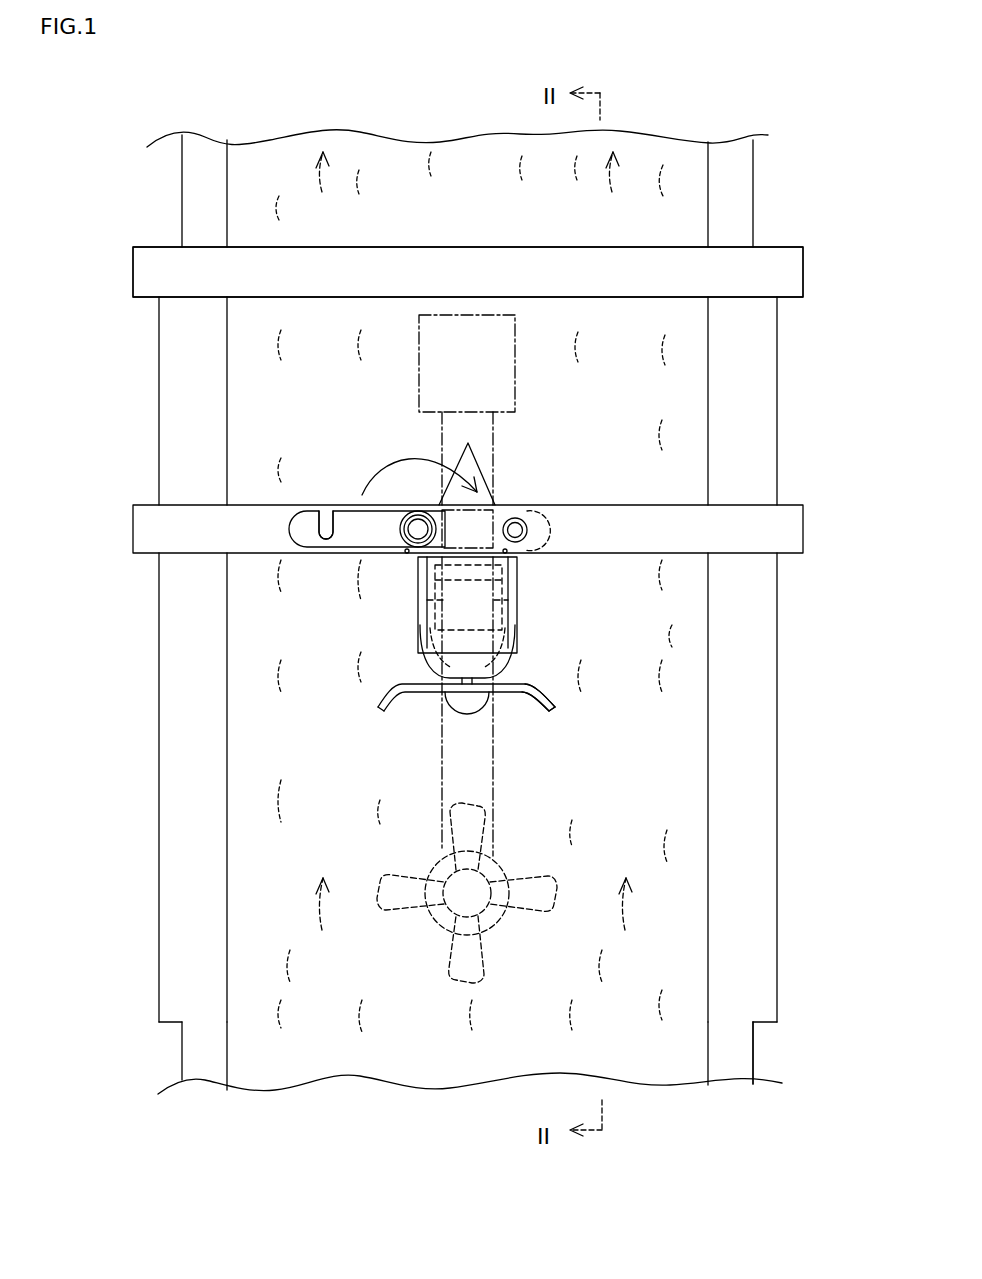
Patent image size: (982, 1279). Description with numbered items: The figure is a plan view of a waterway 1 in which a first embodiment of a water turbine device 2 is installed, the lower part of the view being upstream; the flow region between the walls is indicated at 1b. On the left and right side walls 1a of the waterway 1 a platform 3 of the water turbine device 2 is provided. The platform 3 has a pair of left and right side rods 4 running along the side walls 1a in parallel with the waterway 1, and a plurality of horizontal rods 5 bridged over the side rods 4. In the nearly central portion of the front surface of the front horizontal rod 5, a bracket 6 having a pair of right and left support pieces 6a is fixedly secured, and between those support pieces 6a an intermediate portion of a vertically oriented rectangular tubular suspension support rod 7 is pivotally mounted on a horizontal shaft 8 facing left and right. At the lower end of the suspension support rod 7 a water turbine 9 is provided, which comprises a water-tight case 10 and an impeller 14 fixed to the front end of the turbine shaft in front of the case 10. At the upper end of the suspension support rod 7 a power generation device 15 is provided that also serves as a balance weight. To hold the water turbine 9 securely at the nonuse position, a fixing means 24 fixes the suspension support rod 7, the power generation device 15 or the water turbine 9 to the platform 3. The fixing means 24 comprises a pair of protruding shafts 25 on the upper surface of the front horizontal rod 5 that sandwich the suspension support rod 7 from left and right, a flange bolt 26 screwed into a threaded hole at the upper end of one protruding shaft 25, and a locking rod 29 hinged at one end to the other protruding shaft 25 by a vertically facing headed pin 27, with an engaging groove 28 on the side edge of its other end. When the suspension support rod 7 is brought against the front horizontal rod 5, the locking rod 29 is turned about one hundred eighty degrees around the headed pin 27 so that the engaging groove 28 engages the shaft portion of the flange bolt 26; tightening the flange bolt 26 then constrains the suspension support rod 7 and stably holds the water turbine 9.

The waterway 1 is at (758, 162).
The side wall 1a is at (228, 170).
The flow passage 1b is at (427, 168).
The water turbine device 2 is at (786, 246).
The platform 3 is at (134, 258).
The side rod 4 is at (158, 415).
The horizontal rod 5 is at (144, 298).
The bracket 6 is at (468, 617).
The support piece 6a is at (418, 638).
The suspension support rod 7 is at (432, 660).
The horizontal shaft 8 is at (510, 605).
The water turbine 9 is at (500, 700).
The case 10 is at (494, 709).
The impeller 14 is at (540, 708).
The power generation device 15 is at (518, 582).
The fixing means 24 is at (369, 498).
The protruding shaft 25 is at (520, 520).
The flange bolt 26 is at (523, 529).
The headed pin 27 is at (404, 540).
The engaging groove 28 is at (297, 498).
The locking rod 29 is at (327, 548).